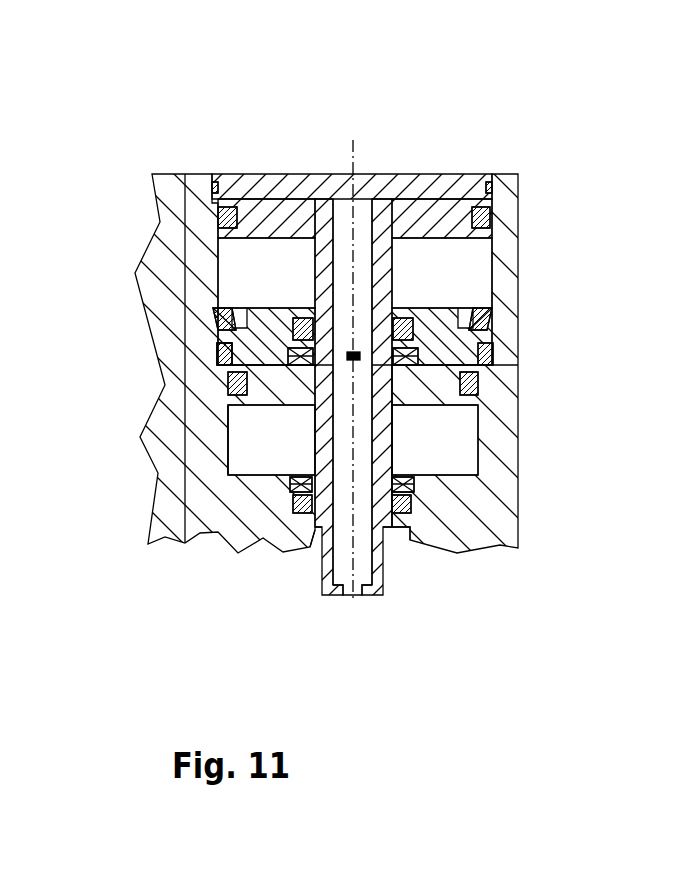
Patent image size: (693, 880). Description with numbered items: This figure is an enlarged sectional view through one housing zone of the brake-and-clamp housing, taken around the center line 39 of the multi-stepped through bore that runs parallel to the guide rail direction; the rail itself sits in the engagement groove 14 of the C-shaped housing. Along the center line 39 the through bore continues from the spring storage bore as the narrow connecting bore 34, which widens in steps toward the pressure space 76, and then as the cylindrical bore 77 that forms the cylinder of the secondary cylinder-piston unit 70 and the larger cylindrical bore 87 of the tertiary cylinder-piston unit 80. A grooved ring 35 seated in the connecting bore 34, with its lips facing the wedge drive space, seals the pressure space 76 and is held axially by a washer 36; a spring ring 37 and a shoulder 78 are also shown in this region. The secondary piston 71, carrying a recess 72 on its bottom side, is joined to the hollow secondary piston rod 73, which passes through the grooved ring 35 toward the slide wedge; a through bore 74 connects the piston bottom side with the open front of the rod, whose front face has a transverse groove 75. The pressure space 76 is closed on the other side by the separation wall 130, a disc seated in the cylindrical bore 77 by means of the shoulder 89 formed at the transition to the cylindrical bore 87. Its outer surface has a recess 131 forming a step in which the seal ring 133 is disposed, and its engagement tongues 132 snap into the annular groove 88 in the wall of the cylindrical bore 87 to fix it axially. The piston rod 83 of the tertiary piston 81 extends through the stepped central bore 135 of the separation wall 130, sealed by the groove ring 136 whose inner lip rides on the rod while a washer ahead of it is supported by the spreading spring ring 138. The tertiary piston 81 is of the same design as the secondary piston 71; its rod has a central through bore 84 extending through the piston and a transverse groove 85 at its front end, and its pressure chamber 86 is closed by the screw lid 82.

The engagement groove 14 is at (169, 518).
The connecting bore 34 is at (392, 537).
The grooved seal ring 35 is at (430, 516).
The washer 36 is at (402, 508).
The spring ring 37 is at (410, 486).
The center line 39 is at (354, 138).
The secondary cylinder-piston unit 70 is at (228, 437).
The secondary piston 71 is at (278, 396).
The recess 72 is at (468, 390).
The secondary piston rod 73 is at (383, 427).
The through bore 74 is at (334, 440).
The transverse groove 75 is at (350, 585).
The pressure space 76 is at (462, 461).
The cylindrical bore 77 is at (229, 457).
The shoulder 78 is at (317, 531).
The tertiary cylinder-piston unit 80 is at (218, 281).
The tertiary piston 81 is at (268, 217).
The screw lid 82 is at (317, 186).
The piston rod 83 is at (382, 270).
The central through bore 84 is at (334, 288).
The transverse groove 85 is at (406, 197).
The pressure chamber 86 is at (478, 272).
The cylindrical bore 87 is at (220, 248).
The annular groove 88 is at (213, 320).
The shoulder 89 is at (483, 368).
The separation wall 130 is at (482, 333).
The recess 131 is at (484, 355).
The engagement tongues 132 is at (487, 317).
The seal ring 133 is at (227, 355).
The central bore 135 is at (413, 333).
The groove ring 136 is at (316, 316).
The spreading spring ring 138 is at (240, 386).